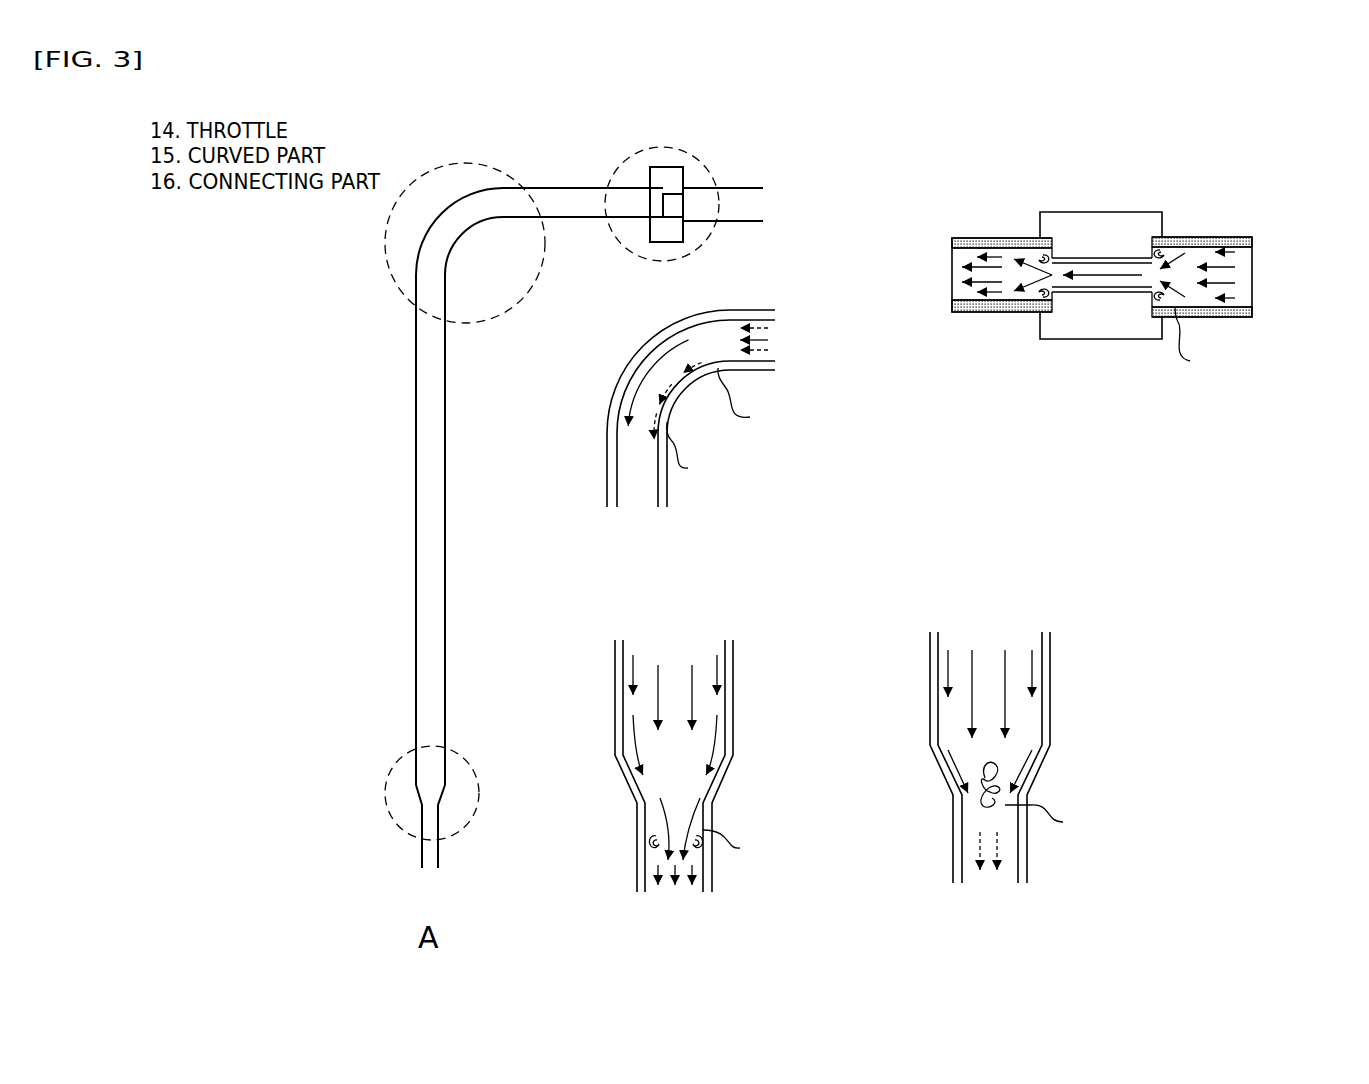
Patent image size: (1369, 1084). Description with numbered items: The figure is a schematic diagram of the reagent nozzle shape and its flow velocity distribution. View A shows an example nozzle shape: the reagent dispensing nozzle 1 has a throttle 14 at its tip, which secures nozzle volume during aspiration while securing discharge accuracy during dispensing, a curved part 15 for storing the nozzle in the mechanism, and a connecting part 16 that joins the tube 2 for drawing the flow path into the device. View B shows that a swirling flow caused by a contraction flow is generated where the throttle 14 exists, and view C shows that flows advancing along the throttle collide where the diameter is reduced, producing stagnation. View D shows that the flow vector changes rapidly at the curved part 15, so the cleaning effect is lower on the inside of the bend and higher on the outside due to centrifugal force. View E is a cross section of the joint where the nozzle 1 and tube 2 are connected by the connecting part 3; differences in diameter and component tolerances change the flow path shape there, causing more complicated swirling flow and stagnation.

The reagent dispensing nozzle 1 is at (416, 513).
The tube 2 is at (763, 188).
The connecting part 3 is at (1082, 340).
The throttle 14 is at (393, 818).
The curved part 15 is at (458, 167).
The connecting part 16 is at (638, 152).